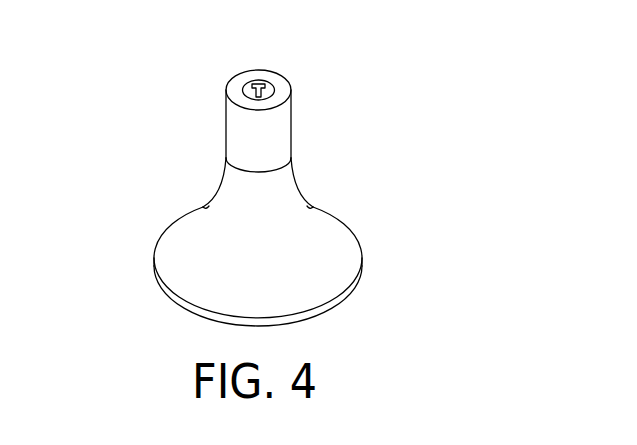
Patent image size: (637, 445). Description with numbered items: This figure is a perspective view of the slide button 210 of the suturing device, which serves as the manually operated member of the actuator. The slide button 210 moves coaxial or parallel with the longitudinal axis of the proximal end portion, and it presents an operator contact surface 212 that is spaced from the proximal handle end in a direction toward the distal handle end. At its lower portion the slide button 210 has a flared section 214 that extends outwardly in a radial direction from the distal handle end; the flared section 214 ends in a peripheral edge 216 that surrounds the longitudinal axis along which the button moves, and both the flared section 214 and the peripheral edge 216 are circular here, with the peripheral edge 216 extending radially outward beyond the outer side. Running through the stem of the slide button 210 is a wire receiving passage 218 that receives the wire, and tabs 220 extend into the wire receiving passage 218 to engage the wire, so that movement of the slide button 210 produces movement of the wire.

The slide button 210 is at (360, 159).
The operator contact surface 212 is at (183, 228).
The flared section 214 is at (192, 262).
The peripheral edge 216 is at (352, 300).
The wire receiving passage 218 is at (257, 86).
The tabs 220 is at (273, 90).